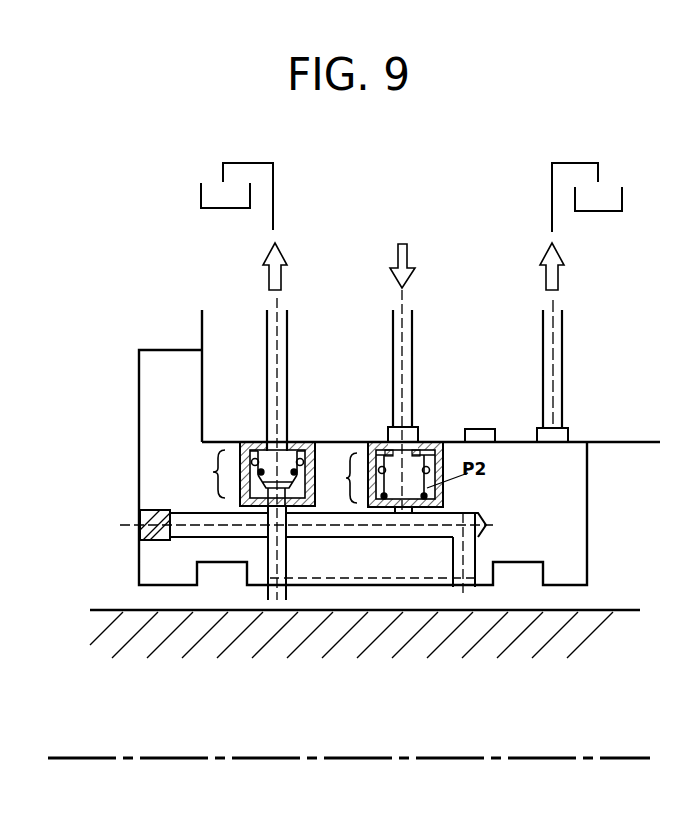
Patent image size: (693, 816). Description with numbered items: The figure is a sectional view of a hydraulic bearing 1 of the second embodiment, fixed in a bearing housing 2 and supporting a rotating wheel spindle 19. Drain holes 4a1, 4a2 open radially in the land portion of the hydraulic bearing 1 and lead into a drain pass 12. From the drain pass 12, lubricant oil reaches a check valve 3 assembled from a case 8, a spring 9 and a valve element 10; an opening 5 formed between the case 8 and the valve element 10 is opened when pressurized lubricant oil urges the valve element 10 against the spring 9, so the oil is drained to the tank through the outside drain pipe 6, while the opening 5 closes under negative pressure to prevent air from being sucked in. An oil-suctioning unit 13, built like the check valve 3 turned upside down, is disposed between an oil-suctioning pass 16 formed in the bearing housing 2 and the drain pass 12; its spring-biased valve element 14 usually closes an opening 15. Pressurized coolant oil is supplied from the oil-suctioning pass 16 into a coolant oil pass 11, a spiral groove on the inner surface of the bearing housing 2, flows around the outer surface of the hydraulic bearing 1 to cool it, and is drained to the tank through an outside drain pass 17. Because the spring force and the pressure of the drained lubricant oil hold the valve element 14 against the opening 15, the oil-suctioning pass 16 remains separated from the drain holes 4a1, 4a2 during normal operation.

The hydraulic bearing 1 is at (165, 368).
The bearing housing 2 is at (227, 345).
The check valve 3 is at (213, 472).
The drain hole 4a1 is at (286, 533).
The drain hole 4a2 is at (463, 577).
The opening 5 is at (275, 507).
The outside drain pipe 6 is at (273, 345).
The case 8 is at (256, 470).
The spring 9 is at (253, 443).
The valve element 10 is at (270, 488).
The coolant oil pass 11 is at (420, 447).
The drain pass 12 is at (343, 530).
The oil-suctioning unit 13 is at (347, 478).
The valve element 14 is at (425, 443).
The opening 15 is at (396, 450).
The oil-suctioning pass 16 is at (428, 349).
The outside drain pass 17 is at (573, 349).
The wheel spindle 19 is at (365, 667).